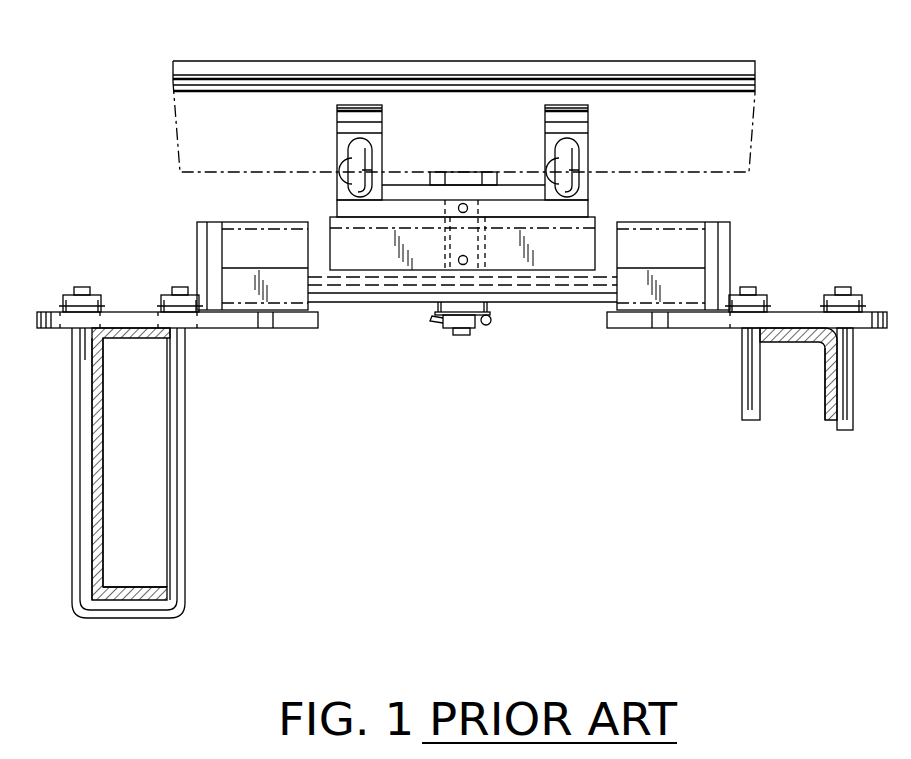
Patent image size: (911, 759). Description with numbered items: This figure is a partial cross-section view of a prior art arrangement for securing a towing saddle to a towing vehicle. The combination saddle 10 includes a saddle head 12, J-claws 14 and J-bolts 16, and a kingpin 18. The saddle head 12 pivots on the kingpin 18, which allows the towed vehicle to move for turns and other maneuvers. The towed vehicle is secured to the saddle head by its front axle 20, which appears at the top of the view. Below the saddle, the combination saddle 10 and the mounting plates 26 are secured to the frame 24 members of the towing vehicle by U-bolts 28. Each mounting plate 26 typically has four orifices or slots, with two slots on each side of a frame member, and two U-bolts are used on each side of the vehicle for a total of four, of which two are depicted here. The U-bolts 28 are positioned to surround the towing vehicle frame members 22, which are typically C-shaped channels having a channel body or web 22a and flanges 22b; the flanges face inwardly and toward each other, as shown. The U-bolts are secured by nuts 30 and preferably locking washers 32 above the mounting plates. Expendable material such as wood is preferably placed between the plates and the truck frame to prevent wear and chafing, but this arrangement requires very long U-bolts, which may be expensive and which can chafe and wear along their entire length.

The combination saddle 10 is at (773, 194).
The saddle head 12 is at (592, 183).
The J-claws 14 is at (563, 112).
The J-bolts 16 is at (570, 157).
The kingpin 18 is at (466, 336).
The front axle 20 is at (752, 110).
The frame members 22 is at (140, 340).
The channel body 22a is at (103, 460).
The flanges 22b is at (120, 595).
The frame 24 is at (86, 440).
The mounting plates 26 is at (295, 328).
The U-bolts 28 is at (185, 420).
The nuts 30 is at (70, 293).
The locking washers 32 is at (60, 308).